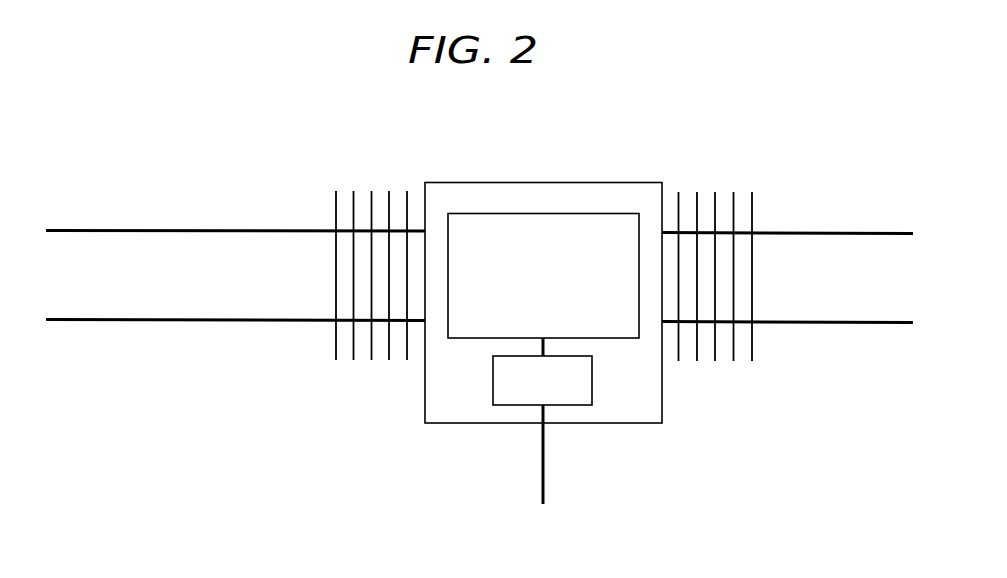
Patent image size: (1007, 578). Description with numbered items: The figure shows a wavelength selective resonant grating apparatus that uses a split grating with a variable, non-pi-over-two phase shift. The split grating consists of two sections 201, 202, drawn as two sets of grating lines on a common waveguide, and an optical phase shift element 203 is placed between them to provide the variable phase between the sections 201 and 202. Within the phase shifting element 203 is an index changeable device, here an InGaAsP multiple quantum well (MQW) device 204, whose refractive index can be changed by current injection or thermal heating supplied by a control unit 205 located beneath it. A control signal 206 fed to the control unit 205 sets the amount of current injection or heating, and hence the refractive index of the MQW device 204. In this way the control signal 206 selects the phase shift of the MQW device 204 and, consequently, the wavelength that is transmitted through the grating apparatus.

The grating section 201 is at (371, 257).
The grating section 202 is at (716, 259).
The optical phase shift element 203 is at (542, 182).
The multiple quantum well device 204 is at (545, 213).
The control unit 205 is at (593, 382).
The control signal 206 is at (541, 435).